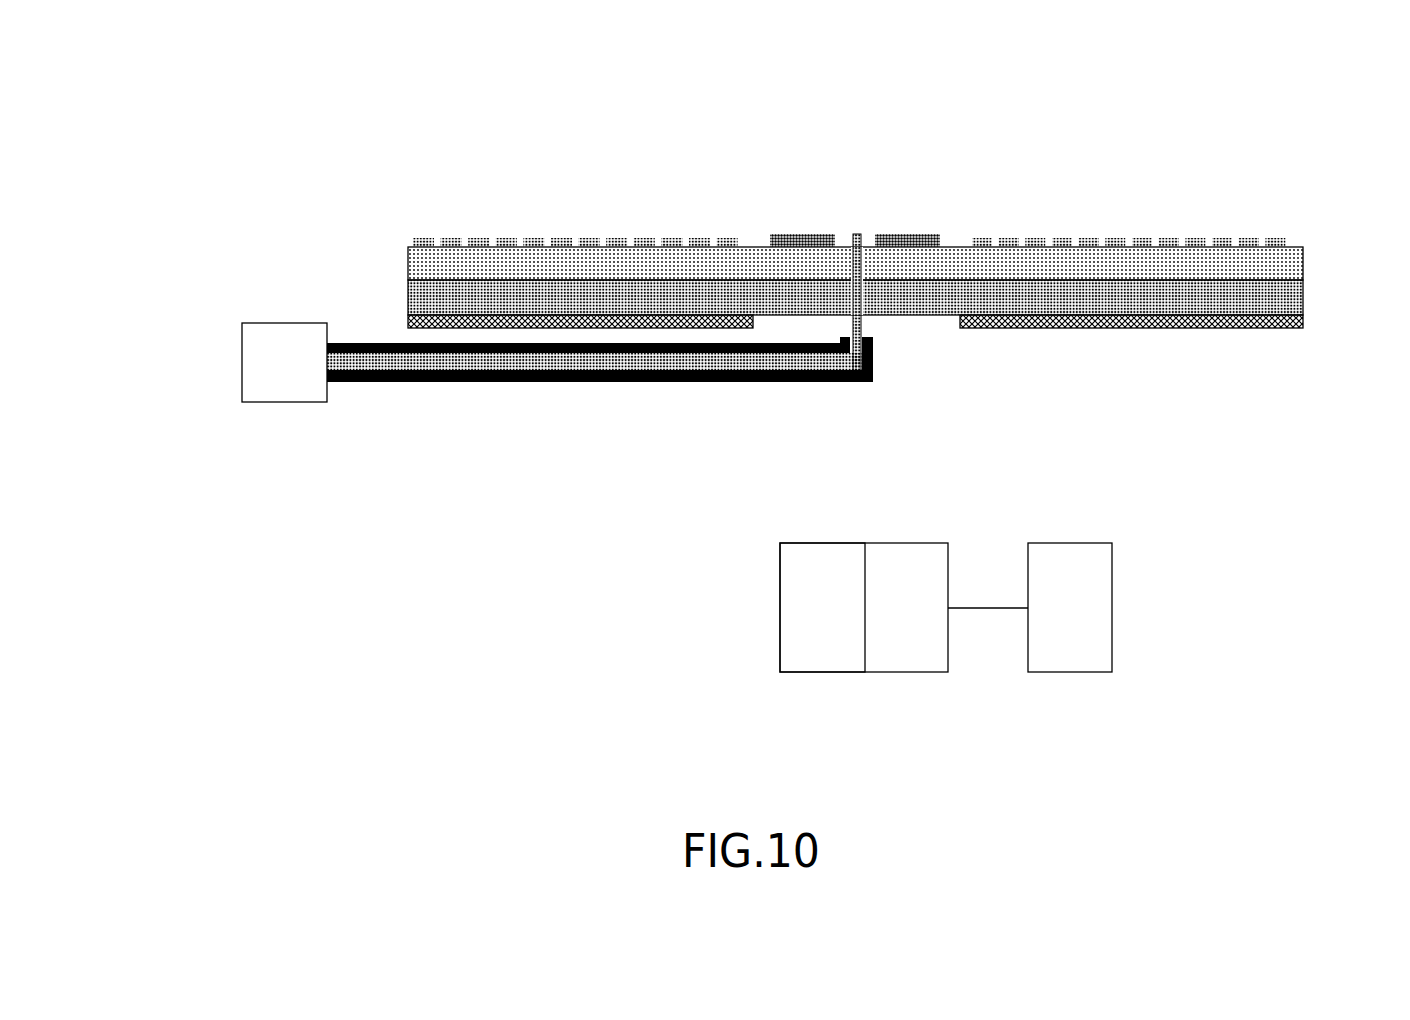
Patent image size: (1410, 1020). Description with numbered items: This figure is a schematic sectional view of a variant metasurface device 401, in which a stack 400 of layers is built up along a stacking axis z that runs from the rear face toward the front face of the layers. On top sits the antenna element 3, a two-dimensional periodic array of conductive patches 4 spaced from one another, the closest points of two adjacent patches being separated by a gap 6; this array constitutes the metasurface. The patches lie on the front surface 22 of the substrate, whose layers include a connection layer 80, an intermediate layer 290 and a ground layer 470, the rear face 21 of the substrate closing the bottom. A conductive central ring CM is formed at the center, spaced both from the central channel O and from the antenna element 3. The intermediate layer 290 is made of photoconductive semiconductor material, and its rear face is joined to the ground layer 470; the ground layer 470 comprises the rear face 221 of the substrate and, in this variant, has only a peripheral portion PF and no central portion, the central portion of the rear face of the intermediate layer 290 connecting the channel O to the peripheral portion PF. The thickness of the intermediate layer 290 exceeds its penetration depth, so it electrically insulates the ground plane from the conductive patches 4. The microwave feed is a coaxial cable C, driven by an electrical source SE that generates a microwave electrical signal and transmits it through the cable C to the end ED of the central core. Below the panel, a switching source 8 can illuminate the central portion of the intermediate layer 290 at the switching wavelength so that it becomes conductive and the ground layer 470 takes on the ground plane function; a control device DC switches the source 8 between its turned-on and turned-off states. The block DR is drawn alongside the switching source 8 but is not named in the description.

The display device 401 is at (212, 116).
The display panel stack 400 is at (856, 283).
The antenna element 3 is at (857, 310).
The conductive patches 4 is at (827, 208).
The gap 6 is at (849, 208).
The connection layer 80 is at (1303, 265).
The intermediate layer 290 is at (1303, 298).
The ground layer 470 is at (903, 365).
The conductive central ring CM is at (797, 233).
The end of the central core ED is at (860, 246).
The central channel O is at (897, 261).
The front surface 22 is at (957, 236).
The rear face of the substrate 221 is at (915, 317).
The rear face 21 is at (1090, 339).
The peripheral portion PF is at (1131, 365).
The electrical source SE is at (242, 375).
The coaxial cable C is at (415, 391).
The driver DR is at (813, 672).
The switching source 8 is at (840, 639).
The control device DC is at (1112, 608).
The stacking axis z is at (112, 250).